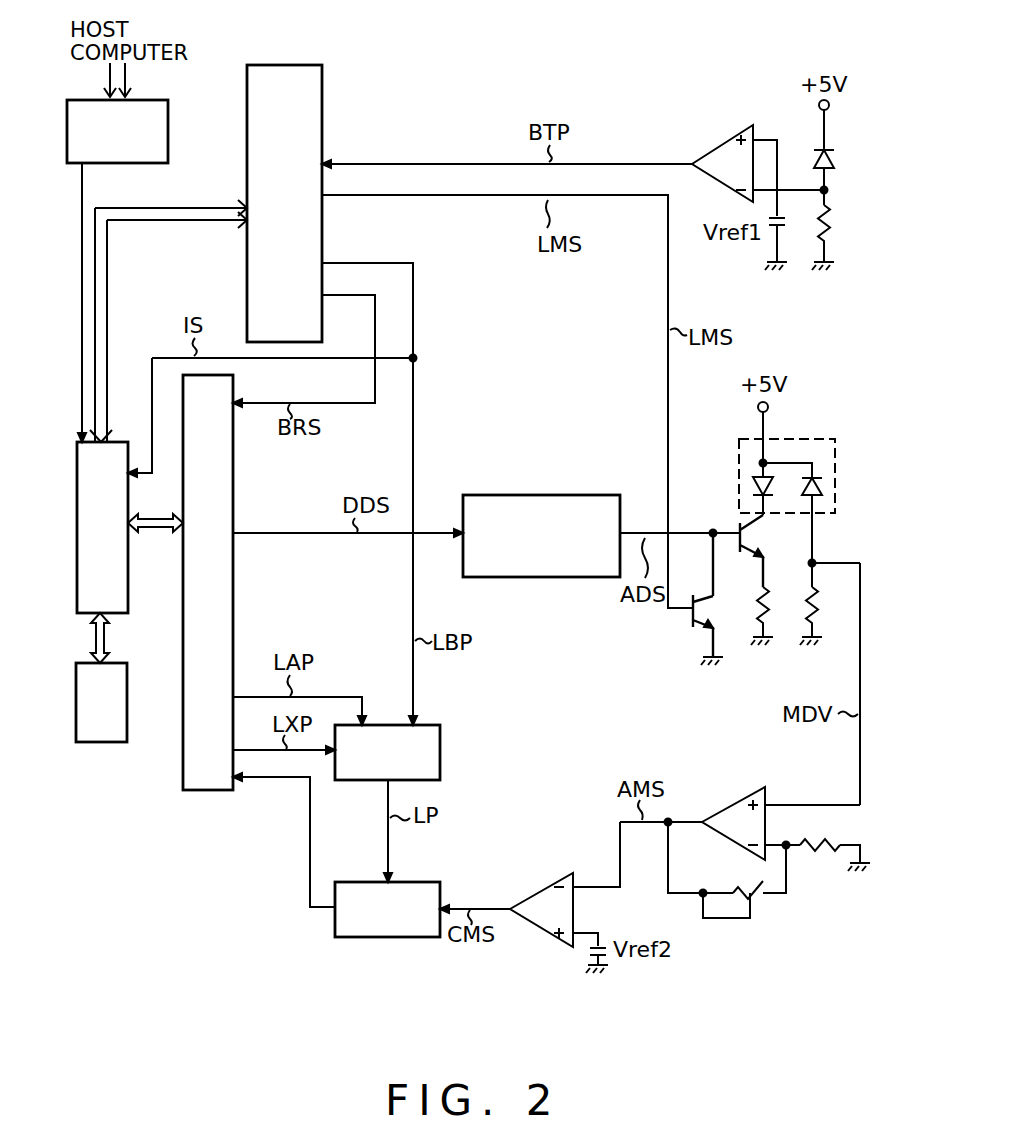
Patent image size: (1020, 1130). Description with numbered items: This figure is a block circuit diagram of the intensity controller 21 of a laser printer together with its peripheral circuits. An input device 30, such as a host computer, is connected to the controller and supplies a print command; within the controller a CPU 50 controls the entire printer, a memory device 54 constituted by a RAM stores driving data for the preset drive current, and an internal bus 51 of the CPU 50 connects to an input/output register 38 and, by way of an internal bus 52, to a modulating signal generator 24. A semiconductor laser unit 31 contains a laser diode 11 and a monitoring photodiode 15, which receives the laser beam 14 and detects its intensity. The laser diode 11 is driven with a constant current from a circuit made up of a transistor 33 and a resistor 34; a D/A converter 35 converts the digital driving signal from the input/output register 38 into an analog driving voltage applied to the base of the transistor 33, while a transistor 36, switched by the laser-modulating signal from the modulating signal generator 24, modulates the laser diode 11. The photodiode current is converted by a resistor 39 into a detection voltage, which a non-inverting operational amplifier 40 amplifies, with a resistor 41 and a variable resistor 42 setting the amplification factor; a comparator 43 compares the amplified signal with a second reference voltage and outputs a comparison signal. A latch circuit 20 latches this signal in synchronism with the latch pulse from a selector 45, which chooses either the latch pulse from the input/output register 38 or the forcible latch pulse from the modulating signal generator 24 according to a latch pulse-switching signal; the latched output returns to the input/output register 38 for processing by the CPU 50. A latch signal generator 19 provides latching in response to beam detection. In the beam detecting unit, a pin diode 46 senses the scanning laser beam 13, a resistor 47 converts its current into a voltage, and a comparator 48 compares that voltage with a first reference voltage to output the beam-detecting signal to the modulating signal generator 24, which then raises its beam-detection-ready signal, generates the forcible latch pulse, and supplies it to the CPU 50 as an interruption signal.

The laser diode 11 is at (754, 486).
The scanning laser beam 13 is at (846, 158).
The laser beam directed to beam intensity detector 14 is at (790, 487).
The photodiode 15 is at (823, 487).
The latch signal generator 19 is at (363, 655).
The latch circuit 20 is at (355, 884).
The intensity controller 21 is at (153, 775).
The modulating signal generator 24 is at (310, 63).
The input device 30 is at (168, 118).
The semiconductor laser unit 31 is at (820, 438).
The transistor 33 is at (765, 536).
The resistor 34 is at (768, 592).
The D/A converter 35 is at (594, 494).
The transistor 36 is at (719, 599).
The input/output register 38 is at (237, 471).
The resistor 39 is at (818, 592).
The operational amplifier 40 is at (728, 803).
The resistor 41 is at (823, 850).
The variable resistor 42 is at (763, 898).
The comparator 43 is at (538, 887).
The selector 45 is at (440, 760).
The pin diode 46 is at (836, 165).
The resistor 47 is at (832, 226).
The comparator 48 is at (719, 147).
The CPU 50 is at (128, 600).
The internal bus 51 is at (158, 530).
The internal bus 52 is at (110, 268).
The memory device 54 is at (127, 715).